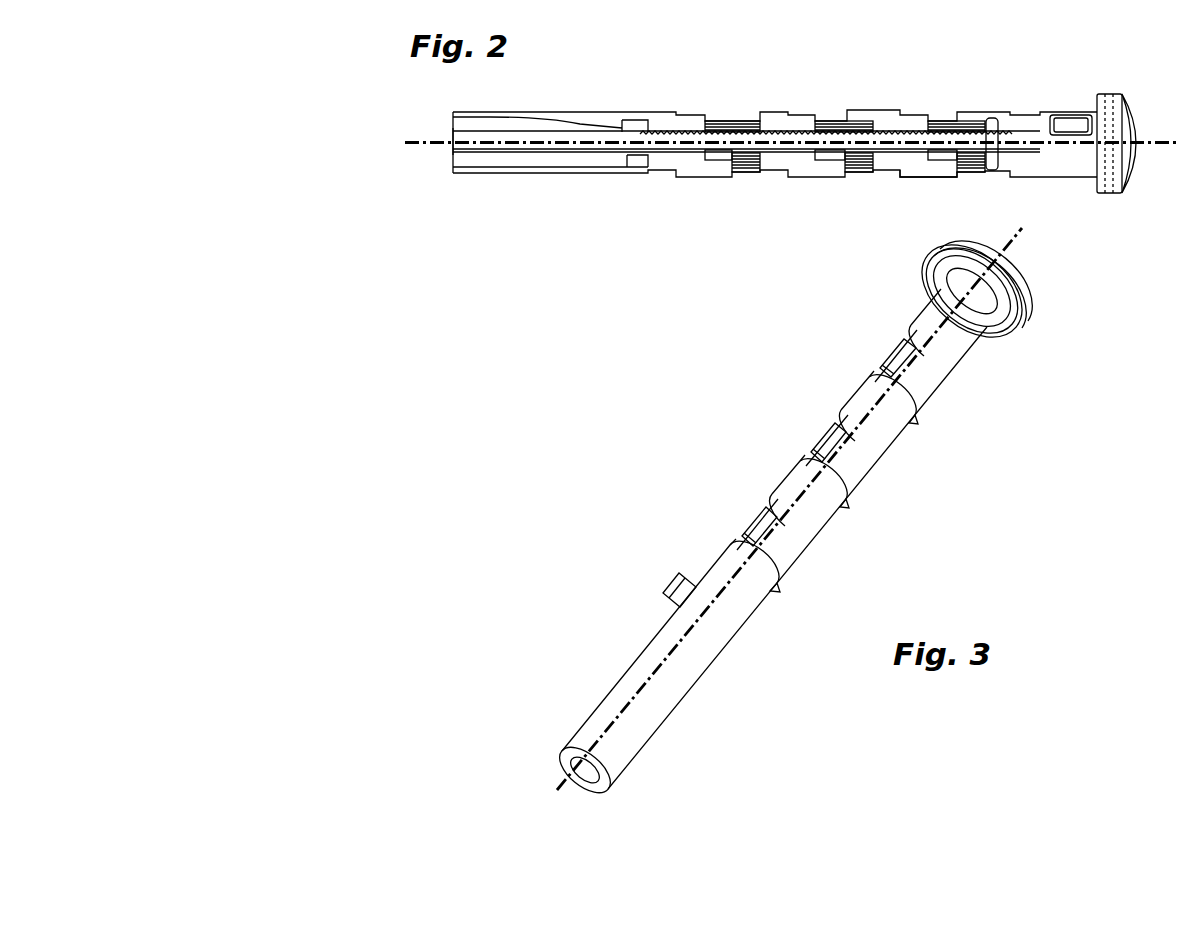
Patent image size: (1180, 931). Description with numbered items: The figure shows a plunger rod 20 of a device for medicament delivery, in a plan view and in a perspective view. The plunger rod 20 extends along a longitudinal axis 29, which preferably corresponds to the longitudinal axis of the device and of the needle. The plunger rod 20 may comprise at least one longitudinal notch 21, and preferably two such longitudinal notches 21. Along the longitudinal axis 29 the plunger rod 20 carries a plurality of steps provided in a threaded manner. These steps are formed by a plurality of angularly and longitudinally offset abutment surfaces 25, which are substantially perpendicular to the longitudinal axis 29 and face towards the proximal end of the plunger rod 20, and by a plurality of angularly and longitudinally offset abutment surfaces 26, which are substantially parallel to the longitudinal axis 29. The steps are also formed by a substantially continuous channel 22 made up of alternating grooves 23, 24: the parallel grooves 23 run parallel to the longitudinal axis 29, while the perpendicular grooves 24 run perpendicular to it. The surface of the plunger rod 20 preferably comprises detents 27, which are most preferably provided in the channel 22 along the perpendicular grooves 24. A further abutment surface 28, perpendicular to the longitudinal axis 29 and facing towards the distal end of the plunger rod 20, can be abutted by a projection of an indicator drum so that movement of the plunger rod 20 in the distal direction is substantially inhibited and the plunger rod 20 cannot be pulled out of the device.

In FIG. 2, the plunger rod 20 is at (696, 88).
In FIG. 3, the plunger rod 20 is at (720, 478).
In FIG. 2, the longitudinal notch 21 is at (829, 141).
In FIG. 3, the channel 22 is at (837, 438).
In FIG. 2, the parallel grooves 23 is at (960, 102).
In FIG. 2, the perpendicular grooves 24 is at (999, 143).
In FIG. 2, the abutment surfaces 25 is at (898, 180).
In FIG. 3, the abutment surfaces 25 is at (906, 340).
In FIG. 2, the abutment surfaces 26 is at (722, 153).
In FIG. 3, the abutment surfaces 26 is at (766, 547).
In FIG. 3, the detents 27 is at (806, 445).
In FIG. 3, the abutment surface 28 is at (880, 372).
In FIG. 2, the longitudinal axis 29 is at (422, 145).
In FIG. 3, the longitudinal axis 29 is at (558, 779).